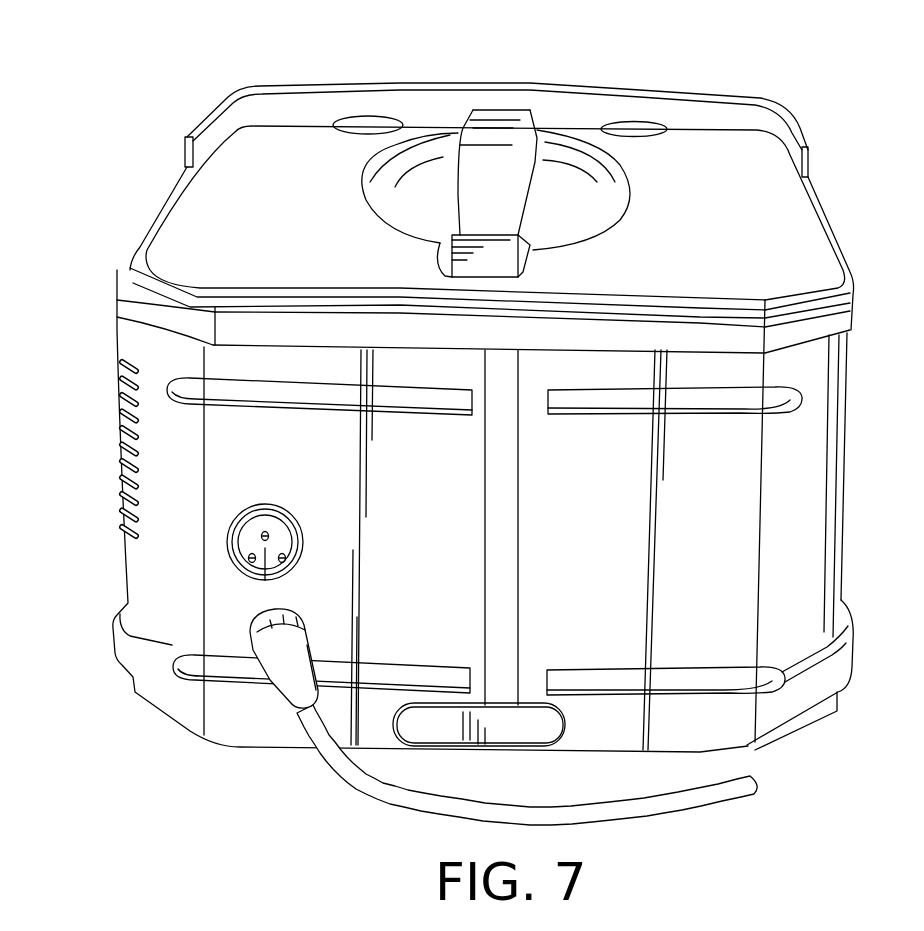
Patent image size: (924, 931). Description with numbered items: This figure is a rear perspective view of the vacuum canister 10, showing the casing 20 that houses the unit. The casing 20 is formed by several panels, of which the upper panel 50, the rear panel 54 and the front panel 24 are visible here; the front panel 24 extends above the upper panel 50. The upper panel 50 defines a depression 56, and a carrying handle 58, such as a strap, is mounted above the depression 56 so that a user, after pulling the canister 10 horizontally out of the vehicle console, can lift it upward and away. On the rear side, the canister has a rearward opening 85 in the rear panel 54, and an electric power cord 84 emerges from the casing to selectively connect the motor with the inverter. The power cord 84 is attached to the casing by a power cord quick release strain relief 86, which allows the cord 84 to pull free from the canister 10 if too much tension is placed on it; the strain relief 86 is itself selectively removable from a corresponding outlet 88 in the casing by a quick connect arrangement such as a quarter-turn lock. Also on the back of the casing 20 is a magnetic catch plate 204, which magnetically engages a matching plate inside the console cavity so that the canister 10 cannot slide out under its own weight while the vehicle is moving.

The canister 10 is at (150, 198).
The casing 20 is at (127, 302).
The front panel 24 is at (533, 84).
The upper panel 50 is at (787, 215).
The rear panel 54 is at (800, 513).
The depression 56 is at (550, 220).
The carrying handle 58 is at (497, 127).
The electric power cord 84 is at (740, 808).
The rearward opening 85 is at (278, 503).
The power cord quick release strain relief 86 is at (243, 580).
The outlet 88 is at (263, 513).
The magnetic catch plate 204 is at (543, 728).